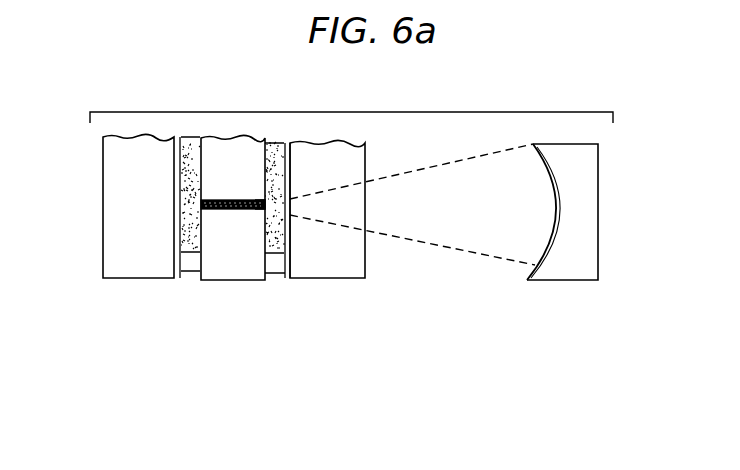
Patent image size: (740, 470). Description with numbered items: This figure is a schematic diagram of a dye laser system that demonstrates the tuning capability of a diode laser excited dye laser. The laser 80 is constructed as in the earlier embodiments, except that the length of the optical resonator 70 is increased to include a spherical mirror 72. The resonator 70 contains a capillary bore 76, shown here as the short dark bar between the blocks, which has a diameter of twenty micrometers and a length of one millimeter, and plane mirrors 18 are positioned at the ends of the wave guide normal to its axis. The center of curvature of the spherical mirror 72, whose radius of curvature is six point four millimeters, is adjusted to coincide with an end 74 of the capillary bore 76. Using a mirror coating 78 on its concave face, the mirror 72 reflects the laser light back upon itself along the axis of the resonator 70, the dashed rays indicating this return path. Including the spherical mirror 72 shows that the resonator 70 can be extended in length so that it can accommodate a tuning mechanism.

The plane mirrors 18 is at (178, 162).
The optical resonator 70 is at (361, 112).
The spherical mirror 72 is at (590, 243).
The end of the capillary bore 74 is at (276, 216).
The capillary bore 76 is at (228, 207).
The mirror coating 78 is at (549, 238).
The laser 80 is at (97, 356).